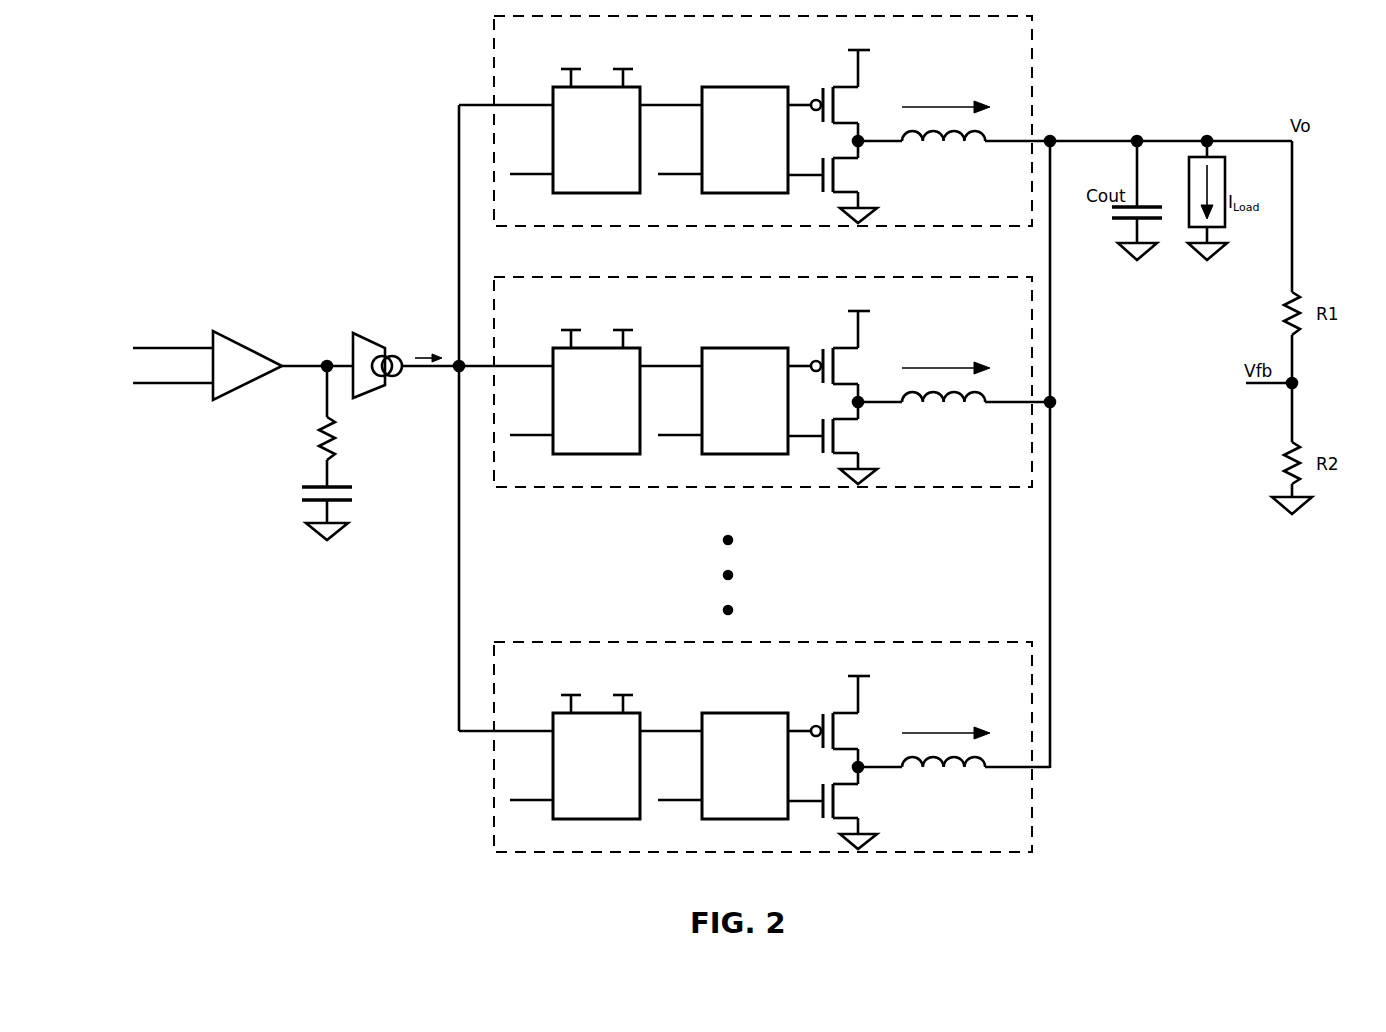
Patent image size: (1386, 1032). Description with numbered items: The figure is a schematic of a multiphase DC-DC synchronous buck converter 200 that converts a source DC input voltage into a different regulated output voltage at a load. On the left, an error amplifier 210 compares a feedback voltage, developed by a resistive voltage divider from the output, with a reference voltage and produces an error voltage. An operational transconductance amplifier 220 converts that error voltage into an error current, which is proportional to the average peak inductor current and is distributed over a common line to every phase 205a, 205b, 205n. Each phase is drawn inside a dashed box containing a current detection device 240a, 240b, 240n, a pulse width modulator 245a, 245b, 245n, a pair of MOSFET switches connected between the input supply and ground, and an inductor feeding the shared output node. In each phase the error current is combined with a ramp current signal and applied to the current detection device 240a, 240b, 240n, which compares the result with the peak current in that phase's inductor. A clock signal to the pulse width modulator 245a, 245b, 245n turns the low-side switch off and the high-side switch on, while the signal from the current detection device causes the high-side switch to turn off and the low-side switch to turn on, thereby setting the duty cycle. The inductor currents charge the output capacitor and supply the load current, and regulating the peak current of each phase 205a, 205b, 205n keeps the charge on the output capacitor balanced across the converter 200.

The multiphase DC-DC synchronous buck converter 200 is at (248, 99).
The phase 205a is at (493, 55).
The phase 205b is at (757, 411).
The phase 205n is at (754, 717).
The error amplifier 210 is at (250, 331).
The operational transconductance amplifier 220 is at (373, 333).
The current detection device 240a is at (549, 122).
The current detection device 240b is at (549, 383).
The current detection device 240n is at (549, 748).
The pulse width modulator 245a is at (714, 141).
The pulse width modulator 245b is at (714, 402).
The pulse width modulator 245n is at (714, 767).